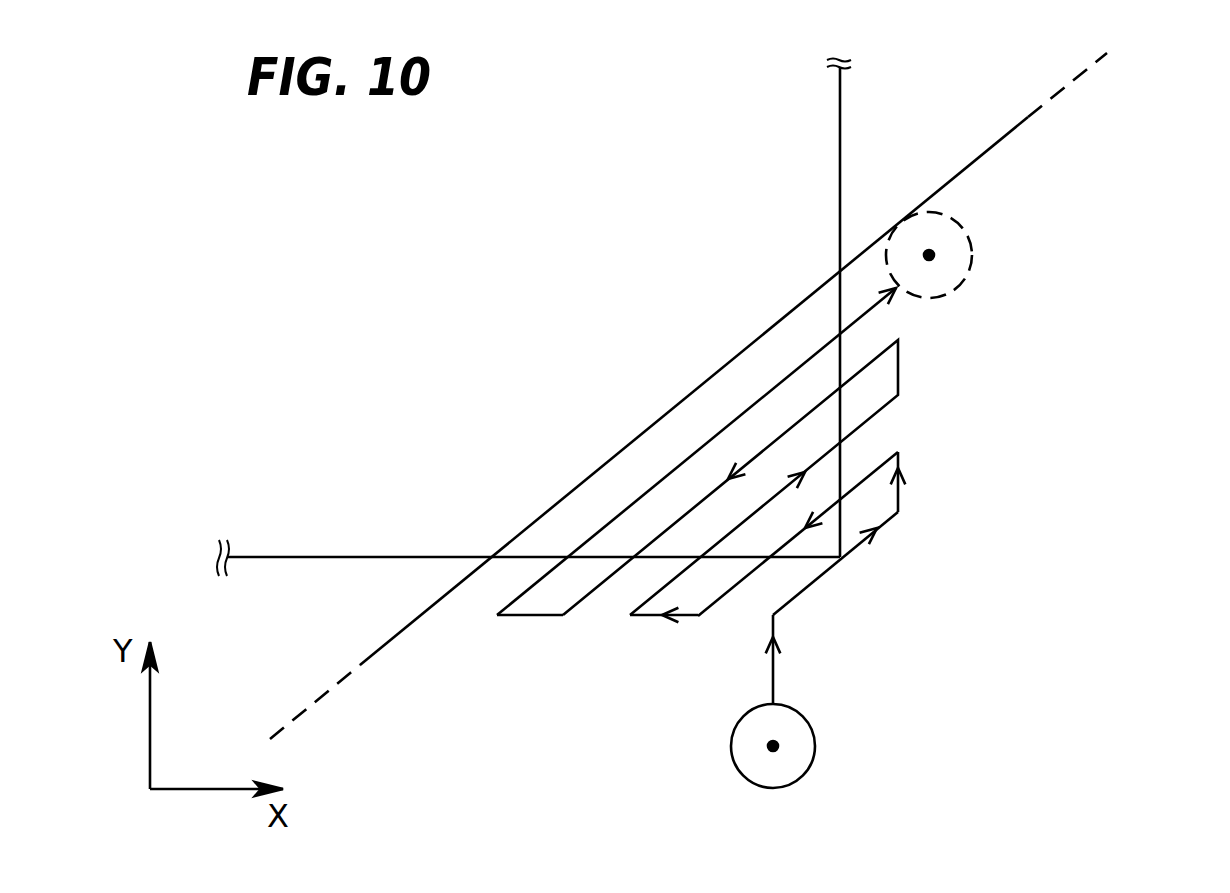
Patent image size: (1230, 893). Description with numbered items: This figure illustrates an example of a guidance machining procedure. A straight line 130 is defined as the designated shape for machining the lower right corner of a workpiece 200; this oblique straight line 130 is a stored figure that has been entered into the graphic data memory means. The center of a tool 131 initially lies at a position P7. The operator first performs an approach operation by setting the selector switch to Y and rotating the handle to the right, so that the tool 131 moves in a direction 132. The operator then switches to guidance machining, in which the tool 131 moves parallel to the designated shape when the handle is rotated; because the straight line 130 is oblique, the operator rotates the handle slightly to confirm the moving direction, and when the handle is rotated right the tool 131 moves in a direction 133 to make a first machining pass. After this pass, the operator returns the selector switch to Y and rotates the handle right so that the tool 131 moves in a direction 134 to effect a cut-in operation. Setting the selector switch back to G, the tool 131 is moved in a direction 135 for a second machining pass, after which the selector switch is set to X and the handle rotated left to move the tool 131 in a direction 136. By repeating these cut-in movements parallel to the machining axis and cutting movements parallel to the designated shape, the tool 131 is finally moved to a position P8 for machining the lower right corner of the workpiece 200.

The workpiece 200 is at (838, 160).
The straight line 130 is at (997, 143).
The tool 131 is at (972, 275).
The direction 132 is at (773, 673).
The direction 133 is at (825, 571).
The direction 134 is at (898, 495).
The direction 135 is at (722, 593).
The direction 136 is at (643, 617).
The position P7 is at (773, 746).
The position P8 is at (929, 255).